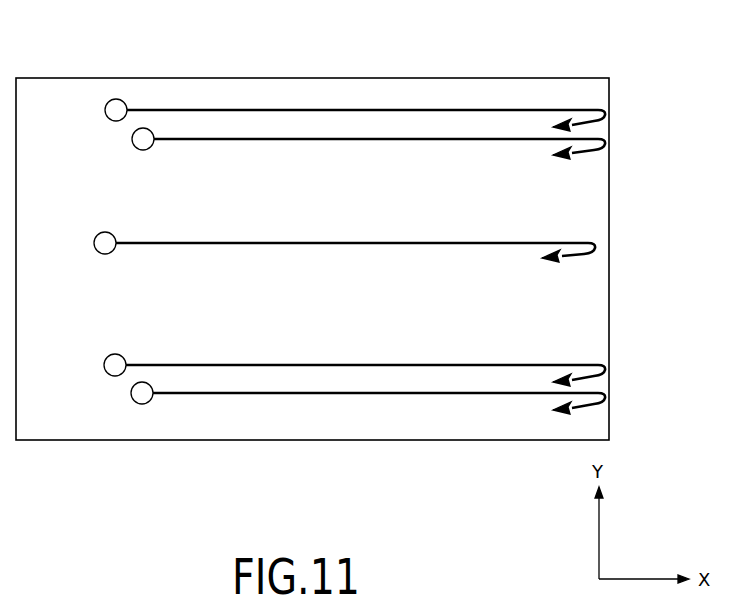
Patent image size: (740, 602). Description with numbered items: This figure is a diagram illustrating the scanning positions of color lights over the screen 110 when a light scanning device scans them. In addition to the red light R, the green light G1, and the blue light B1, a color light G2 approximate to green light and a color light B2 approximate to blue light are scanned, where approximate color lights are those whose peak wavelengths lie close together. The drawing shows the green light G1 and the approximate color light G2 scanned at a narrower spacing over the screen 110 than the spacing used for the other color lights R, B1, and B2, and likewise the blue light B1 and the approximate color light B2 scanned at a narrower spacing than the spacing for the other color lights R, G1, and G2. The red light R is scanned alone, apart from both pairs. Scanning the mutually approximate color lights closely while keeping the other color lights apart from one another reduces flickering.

The screen 110 is at (525, 79).
The color light approximate to green light G2 is at (105, 109).
The green light G1 is at (132, 138).
The red light R is at (94, 242).
The blue light B1 is at (104, 364).
The color light approximate to blue light B2 is at (131, 392).